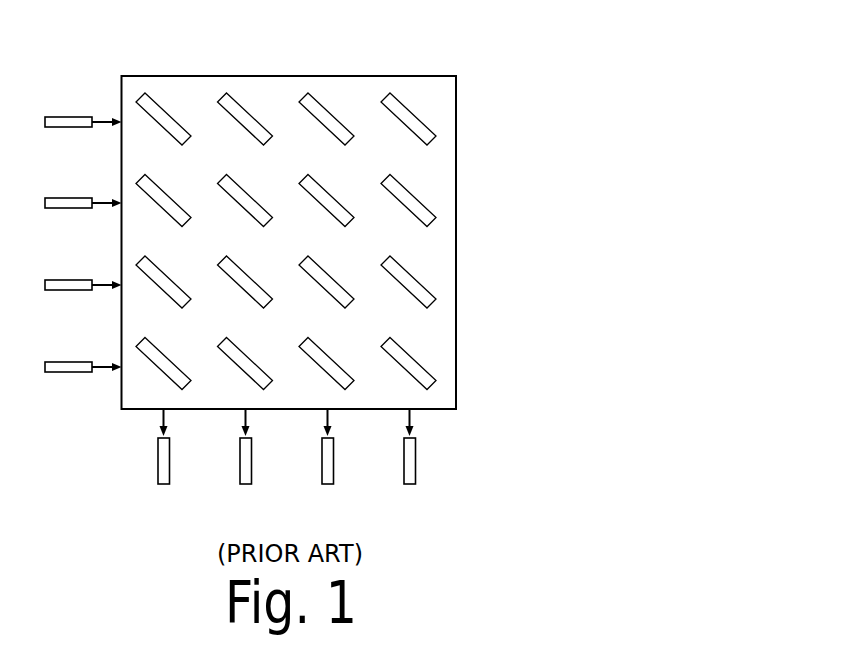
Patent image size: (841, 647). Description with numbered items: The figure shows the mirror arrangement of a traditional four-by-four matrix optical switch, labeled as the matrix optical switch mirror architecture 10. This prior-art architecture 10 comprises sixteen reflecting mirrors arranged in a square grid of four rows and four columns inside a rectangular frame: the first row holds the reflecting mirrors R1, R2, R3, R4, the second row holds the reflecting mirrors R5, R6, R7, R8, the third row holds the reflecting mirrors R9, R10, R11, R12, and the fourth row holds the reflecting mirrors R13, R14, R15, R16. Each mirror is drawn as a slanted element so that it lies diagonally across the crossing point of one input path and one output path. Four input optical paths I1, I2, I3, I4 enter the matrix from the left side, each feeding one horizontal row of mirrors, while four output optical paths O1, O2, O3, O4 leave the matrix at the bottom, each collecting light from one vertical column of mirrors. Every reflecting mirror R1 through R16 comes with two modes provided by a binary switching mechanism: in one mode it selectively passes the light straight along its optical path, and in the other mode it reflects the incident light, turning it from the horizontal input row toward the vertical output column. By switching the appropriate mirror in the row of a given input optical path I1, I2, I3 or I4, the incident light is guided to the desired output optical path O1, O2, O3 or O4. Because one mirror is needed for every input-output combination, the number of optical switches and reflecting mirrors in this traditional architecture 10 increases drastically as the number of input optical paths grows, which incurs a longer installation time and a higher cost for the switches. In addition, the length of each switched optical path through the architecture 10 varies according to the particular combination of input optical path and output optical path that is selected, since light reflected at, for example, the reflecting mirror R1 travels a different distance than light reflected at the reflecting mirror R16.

The matrix optical switch mirror architecture 10 is at (428, 59).
The reflecting mirror R1 is at (163, 123).
The reflecting mirror R2 is at (245, 123).
The reflecting mirror R3 is at (326, 123).
The reflecting mirror R4 is at (408, 123).
The reflecting mirror R5 is at (163, 205).
The reflecting mirror R6 is at (245, 205).
The reflecting mirror R7 is at (326, 205).
The reflecting mirror R8 is at (408, 205).
The reflecting mirror R9 is at (163, 286).
The reflecting mirror R10 is at (245, 286).
The reflecting mirror R11 is at (326, 286).
The reflecting mirror R12 is at (408, 286).
The reflecting mirror R13 is at (163, 368).
The reflecting mirror R14 is at (245, 368).
The reflecting mirror R15 is at (326, 368).
The reflecting mirror R16 is at (408, 368).
The input optical path I1 is at (83, 106).
The input optical path I2 is at (83, 187).
The input optical path I3 is at (83, 269).
The input optical path I4 is at (83, 351).
The output optical path O1 is at (180, 453).
The output optical path O2 is at (262, 453).
The output optical path O3 is at (344, 453).
The output optical path O4 is at (426, 453).